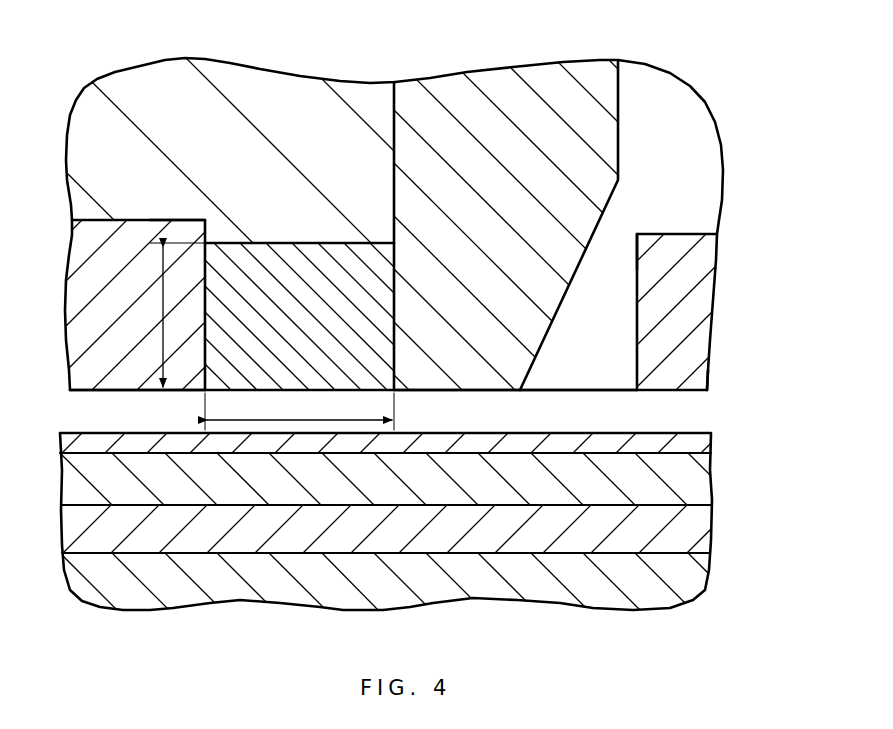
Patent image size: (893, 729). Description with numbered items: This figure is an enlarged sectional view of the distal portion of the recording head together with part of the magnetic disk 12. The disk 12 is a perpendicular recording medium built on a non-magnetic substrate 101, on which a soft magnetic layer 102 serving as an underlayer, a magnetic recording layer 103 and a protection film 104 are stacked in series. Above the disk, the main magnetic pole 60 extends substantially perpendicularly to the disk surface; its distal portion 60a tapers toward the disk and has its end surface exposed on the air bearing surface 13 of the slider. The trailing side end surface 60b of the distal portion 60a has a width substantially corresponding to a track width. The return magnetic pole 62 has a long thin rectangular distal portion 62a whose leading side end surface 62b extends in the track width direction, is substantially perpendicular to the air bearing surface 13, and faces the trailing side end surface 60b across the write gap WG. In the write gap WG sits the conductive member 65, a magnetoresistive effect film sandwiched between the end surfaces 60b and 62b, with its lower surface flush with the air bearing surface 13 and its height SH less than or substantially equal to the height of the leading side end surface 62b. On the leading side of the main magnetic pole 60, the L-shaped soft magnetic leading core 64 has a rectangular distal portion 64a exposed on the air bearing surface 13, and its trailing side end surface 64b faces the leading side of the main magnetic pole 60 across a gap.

The main magnetic pole 60 is at (537, 82).
The distal portion of main magnetic pole 60a is at (460, 347).
The trailing side end surface 60b is at (393, 200).
The conductive member 65 is at (302, 253).
The return magnetic pole 62 is at (82, 258).
The distal portion of return magnetic pole 62a is at (125, 371).
The leading side end surface 62b is at (213, 232).
The leading core 64 is at (700, 293).
The distal portion of leading core 64a is at (690, 352).
The trailing side end surface 64b is at (637, 253).
The air bearing surface 13 is at (600, 393).
The magnetic disk 12 is at (443, 522).
The substrate 101 is at (420, 582).
The soft magnetic layer 102 is at (695, 528).
The magnetic recording layer 103 is at (700, 486).
The protection film 104 is at (700, 446).
The height of conductive member SH is at (165, 315).
The write gap WG is at (299, 411).